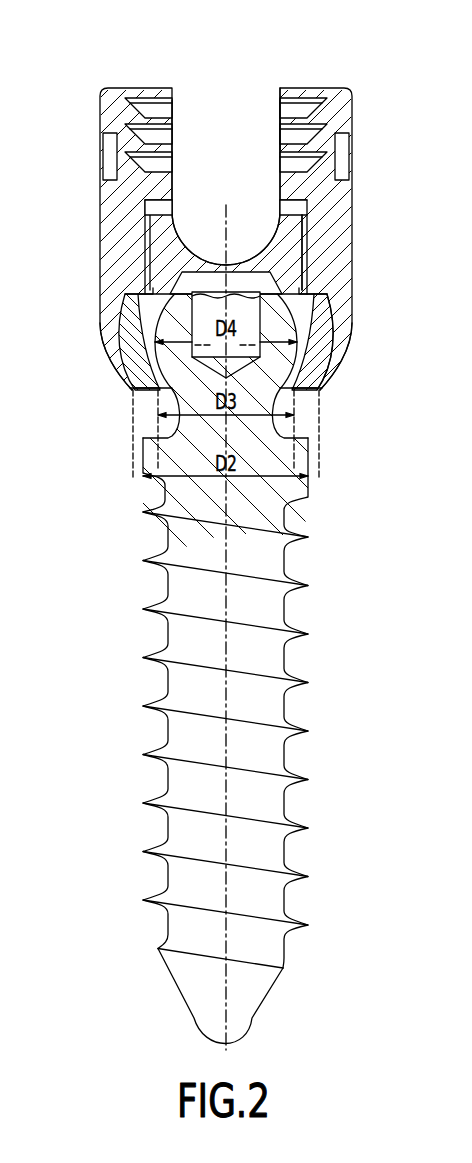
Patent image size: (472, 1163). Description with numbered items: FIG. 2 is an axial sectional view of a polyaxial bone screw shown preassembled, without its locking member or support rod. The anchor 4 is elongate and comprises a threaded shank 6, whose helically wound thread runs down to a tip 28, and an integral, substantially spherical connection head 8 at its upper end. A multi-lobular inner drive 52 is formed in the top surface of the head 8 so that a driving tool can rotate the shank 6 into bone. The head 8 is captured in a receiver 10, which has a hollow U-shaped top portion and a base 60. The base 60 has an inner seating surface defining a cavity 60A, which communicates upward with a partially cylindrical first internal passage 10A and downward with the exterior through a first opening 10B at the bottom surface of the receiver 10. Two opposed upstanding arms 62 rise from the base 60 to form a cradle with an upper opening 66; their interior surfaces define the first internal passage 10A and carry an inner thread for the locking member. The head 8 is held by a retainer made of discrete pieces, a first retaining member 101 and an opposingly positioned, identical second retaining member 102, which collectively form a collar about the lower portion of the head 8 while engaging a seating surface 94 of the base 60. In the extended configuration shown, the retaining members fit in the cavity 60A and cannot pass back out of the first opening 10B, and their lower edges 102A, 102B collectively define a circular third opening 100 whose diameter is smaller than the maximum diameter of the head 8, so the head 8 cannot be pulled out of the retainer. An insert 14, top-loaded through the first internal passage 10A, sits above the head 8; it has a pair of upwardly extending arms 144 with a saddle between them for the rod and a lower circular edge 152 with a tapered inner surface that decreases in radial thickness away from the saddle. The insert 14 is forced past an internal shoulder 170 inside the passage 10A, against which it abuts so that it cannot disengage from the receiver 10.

The anchor 4 is at (221, 668).
The threaded shank 6 is at (290, 648).
The connection head 8 is at (300, 350).
The receiver 10 is at (93, 108).
The first internal passage 10A is at (234, 152).
The first opening 10B is at (118, 392).
The insert 14 is at (307, 252).
The tip 28 is at (197, 1004).
The inner drive 52 is at (238, 294).
The base 60 is at (340, 337).
The cavity 60A is at (115, 340).
The upstanding arms 62 is at (110, 190).
The upper opening 66 is at (236, 98).
The seating surface 94 is at (337, 307).
The third opening 100 is at (142, 476).
The first retaining member 101 is at (315, 388).
The second retaining member 102 is at (102, 321).
The lower edge of retaining member 102A is at (135, 392).
The lower edge of retaining member 102B is at (314, 412).
The upwardly extending arms 144 is at (140, 228).
The lower circular edge 152 is at (140, 270).
The internal shoulder 170 is at (150, 196).